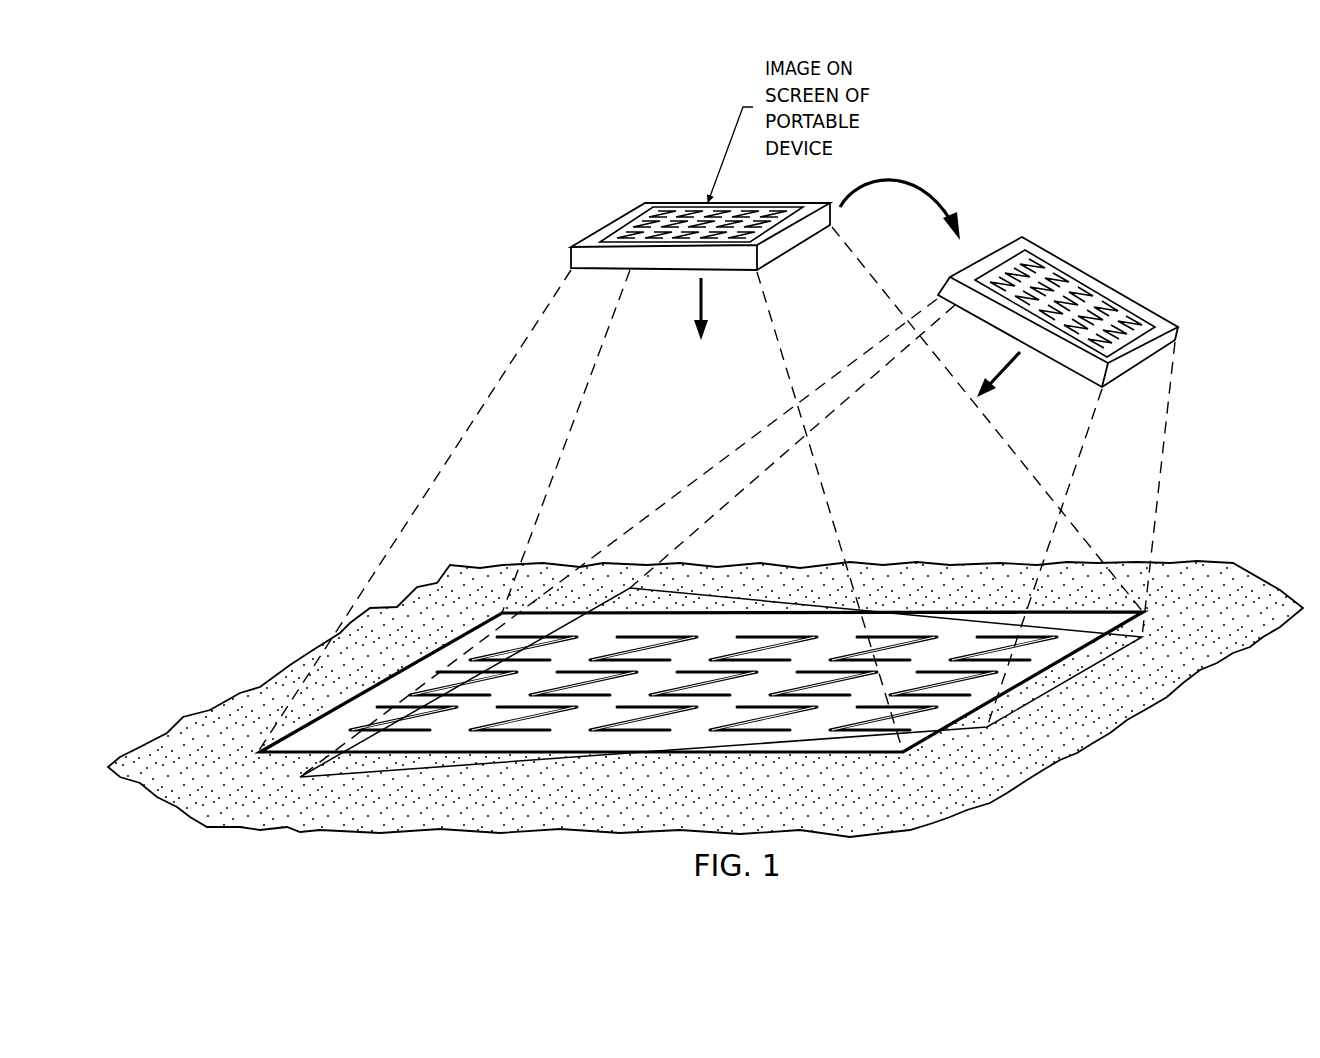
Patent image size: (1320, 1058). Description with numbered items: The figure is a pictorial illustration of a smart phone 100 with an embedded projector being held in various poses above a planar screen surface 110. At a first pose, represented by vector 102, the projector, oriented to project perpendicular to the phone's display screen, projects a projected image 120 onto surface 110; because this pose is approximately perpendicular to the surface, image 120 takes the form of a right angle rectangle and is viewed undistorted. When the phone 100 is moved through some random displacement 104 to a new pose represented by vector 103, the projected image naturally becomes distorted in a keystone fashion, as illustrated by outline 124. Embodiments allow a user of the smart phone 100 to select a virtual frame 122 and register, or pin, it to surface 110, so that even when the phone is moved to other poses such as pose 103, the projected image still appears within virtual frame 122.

The smart phone 100 is at (607, 225).
The vector 102 is at (698, 303).
The vector 103 is at (1000, 377).
The random displacement 104 is at (905, 168).
The planar screen surface 110 is at (1167, 673).
The projected image 120 is at (410, 683).
The virtual frame 122 is at (835, 755).
The outline 124 is at (385, 770).